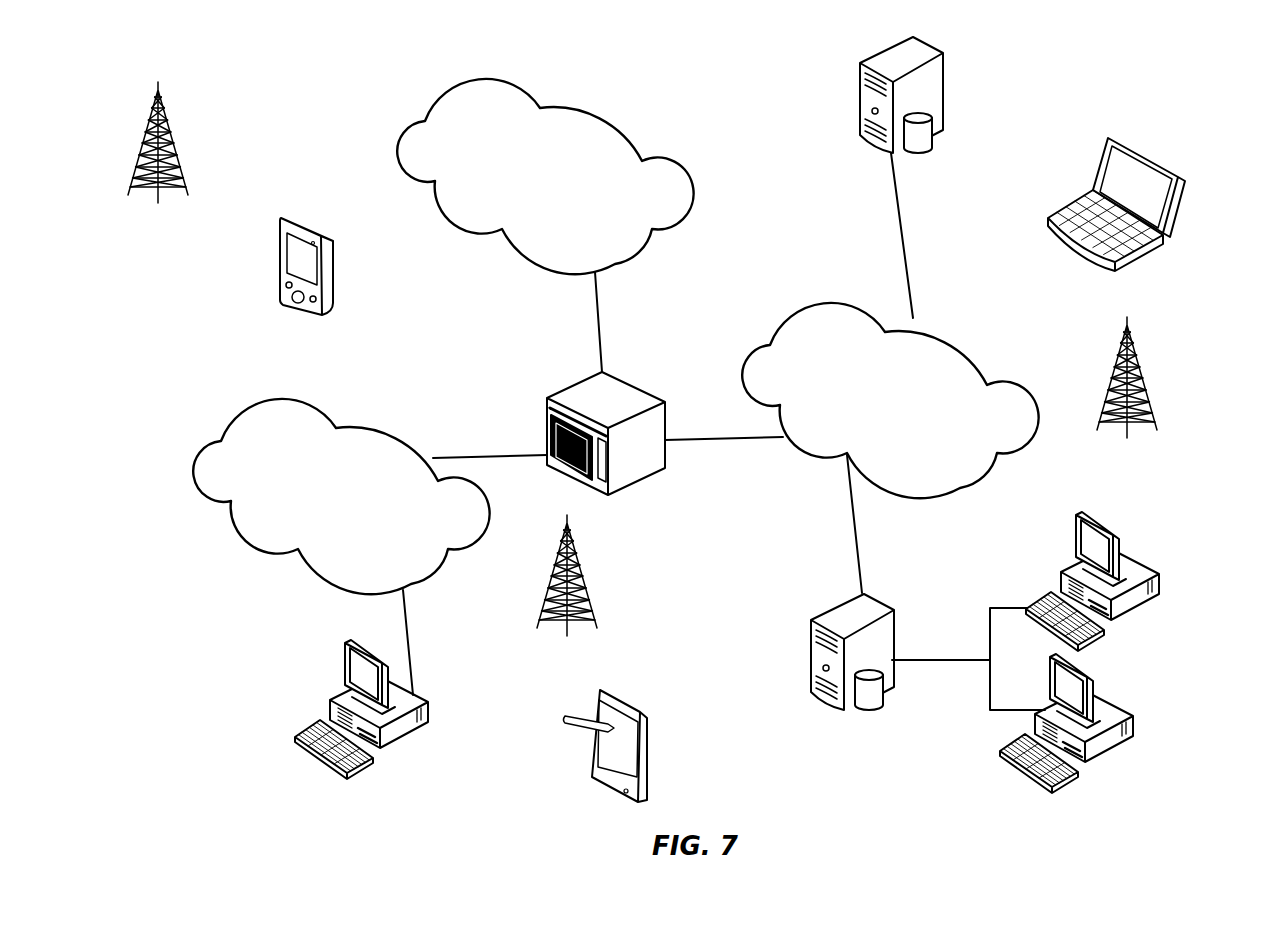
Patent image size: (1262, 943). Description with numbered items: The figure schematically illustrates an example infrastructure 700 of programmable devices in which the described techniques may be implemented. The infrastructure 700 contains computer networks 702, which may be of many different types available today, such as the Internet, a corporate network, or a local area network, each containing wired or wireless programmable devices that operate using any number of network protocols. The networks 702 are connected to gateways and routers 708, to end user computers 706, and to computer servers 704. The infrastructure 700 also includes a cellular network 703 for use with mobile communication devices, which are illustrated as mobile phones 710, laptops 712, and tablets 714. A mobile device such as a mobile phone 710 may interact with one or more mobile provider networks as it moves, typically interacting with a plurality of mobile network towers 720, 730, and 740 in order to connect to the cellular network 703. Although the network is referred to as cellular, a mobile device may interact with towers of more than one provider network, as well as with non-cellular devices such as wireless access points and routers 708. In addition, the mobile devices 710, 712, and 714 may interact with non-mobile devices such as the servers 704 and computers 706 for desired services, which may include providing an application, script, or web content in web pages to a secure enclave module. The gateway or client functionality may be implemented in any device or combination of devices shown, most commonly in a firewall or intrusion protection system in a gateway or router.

The infrastructure 700 is at (1028, 130).
The computer networks 702 is at (383, 377).
The cellular network 703 is at (590, 112).
The computer servers 704 is at (813, 640).
The end user computers 706 is at (1190, 660).
The gateways and routers 708 is at (628, 383).
The mobile phones 710 is at (315, 220).
The laptops 712 is at (1157, 170).
The tablets 714 is at (633, 700).
The mobile network tower 720 is at (567, 593).
The mobile network tower 730 is at (1127, 394).
The mobile network tower 740 is at (158, 160).